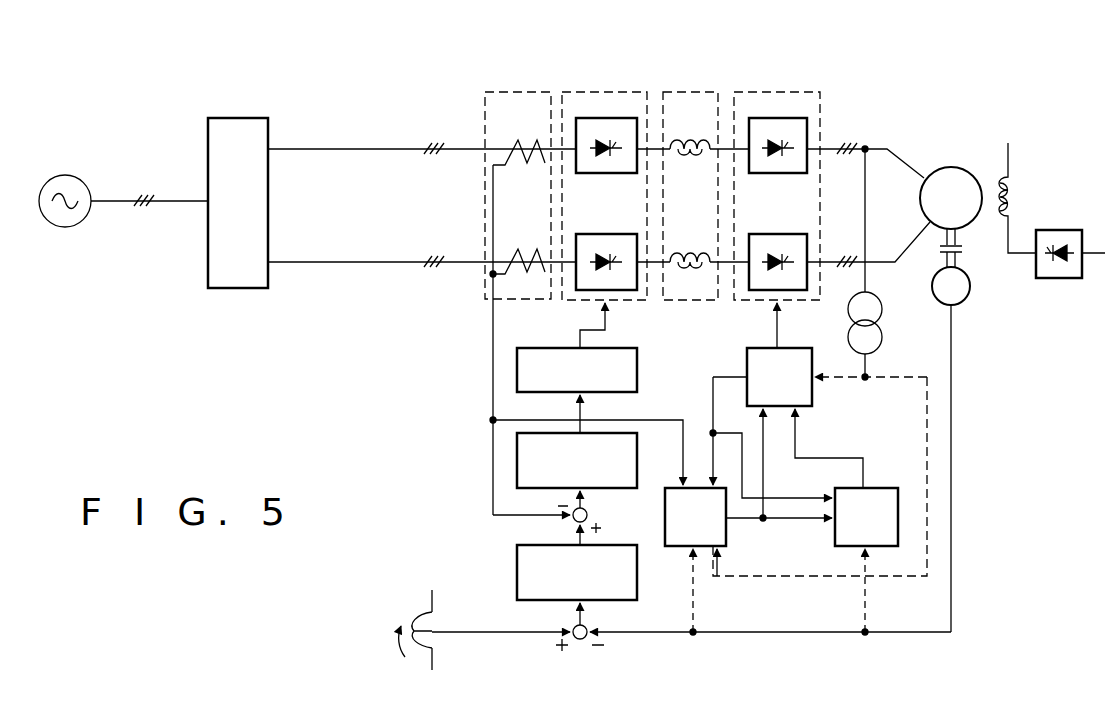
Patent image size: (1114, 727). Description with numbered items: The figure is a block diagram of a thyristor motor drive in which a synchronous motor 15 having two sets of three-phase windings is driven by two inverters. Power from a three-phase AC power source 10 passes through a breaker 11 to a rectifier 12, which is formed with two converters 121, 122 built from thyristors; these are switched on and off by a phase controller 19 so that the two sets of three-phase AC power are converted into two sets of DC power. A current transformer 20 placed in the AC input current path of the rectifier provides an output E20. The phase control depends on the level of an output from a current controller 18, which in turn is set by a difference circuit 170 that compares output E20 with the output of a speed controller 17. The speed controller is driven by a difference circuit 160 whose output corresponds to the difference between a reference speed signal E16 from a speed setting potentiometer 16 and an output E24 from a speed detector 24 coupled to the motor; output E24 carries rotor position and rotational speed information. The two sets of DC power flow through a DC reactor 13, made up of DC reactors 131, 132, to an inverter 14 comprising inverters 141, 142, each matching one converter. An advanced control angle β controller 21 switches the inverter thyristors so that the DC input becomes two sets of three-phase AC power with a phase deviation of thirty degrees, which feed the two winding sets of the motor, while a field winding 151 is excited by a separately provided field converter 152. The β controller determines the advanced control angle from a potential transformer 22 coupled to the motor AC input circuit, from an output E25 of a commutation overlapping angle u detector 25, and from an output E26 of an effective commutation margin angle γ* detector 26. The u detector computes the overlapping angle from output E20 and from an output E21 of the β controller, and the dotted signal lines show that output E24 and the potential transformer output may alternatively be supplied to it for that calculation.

The 3-phase AC power source 10 is at (62, 176).
The breaker 11 is at (230, 116).
The rectifier 12 is at (604, 176).
The converter 121 is at (614, 176).
The converter 122 is at (590, 242).
The DC reactor 13 is at (690, 176).
The DC reactor 131 is at (691, 140).
The DC reactor 132 is at (690, 251).
The inverter 14 is at (777, 176).
The inverter 141 is at (787, 176).
The inverter 142 is at (772, 242).
The synchronous motor 15 is at (958, 167).
The field winding 151 is at (1020, 192).
The field converter 152 is at (1062, 280).
The speed setting potentiometer 16 is at (411, 656).
The speed controller 17 is at (516, 574).
The current controller 18 is at (637, 462).
The phase controller 19 is at (637, 372).
The current transformer 20 is at (487, 287).
The advanced control angle β controller 21 is at (812, 395).
The potential transformer 22 is at (882, 337).
The speed detector 24 is at (966, 298).
The commutation overlapping angle u detector 25 is at (726, 530).
The effective commutation margin angle γ* detector 26 is at (886, 488).
The difference circuit 160 is at (587, 625).
The difference circuit 170 is at (588, 513).
The reference speed signal E16 is at (525, 636).
The output from current transformer E20 is at (490, 420).
The output from β controller E21 is at (710, 430).
The output from speed detector E24 is at (952, 538).
The output from u detector E25 is at (763, 520).
The output from γ* detector E26 is at (830, 458).